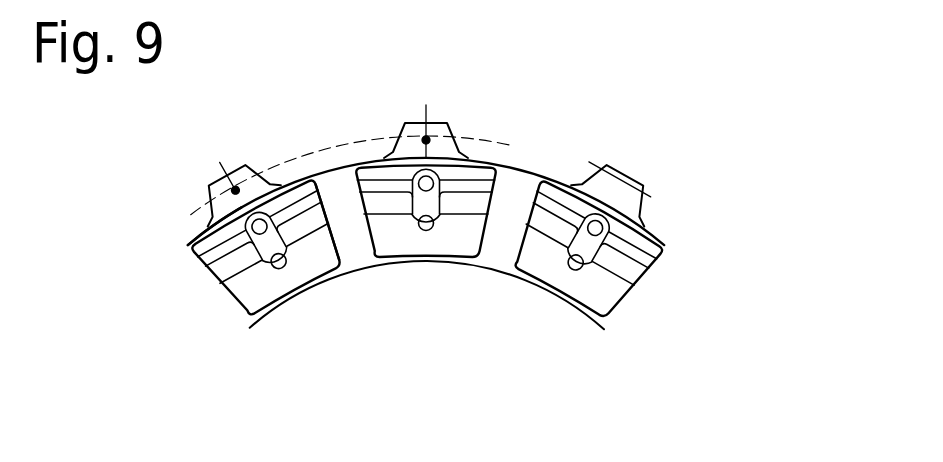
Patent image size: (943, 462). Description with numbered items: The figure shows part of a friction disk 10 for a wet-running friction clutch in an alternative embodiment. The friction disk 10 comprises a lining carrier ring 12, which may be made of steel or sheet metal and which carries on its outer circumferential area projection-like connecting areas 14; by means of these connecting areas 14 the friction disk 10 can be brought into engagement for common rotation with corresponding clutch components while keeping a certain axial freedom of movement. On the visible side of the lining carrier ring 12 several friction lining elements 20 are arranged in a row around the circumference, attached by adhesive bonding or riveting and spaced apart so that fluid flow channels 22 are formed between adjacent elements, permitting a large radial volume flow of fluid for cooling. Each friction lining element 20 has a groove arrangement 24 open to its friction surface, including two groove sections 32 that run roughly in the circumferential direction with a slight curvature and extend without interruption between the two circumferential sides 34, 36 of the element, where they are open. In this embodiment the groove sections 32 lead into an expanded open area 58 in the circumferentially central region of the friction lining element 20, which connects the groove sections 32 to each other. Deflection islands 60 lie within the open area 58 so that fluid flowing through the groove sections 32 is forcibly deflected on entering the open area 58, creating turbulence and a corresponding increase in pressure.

The friction disk 10 is at (732, 132).
The lining carrier ring 12 is at (519, 180).
The connecting areas 14 is at (612, 178).
The friction lining element 20 is at (249, 234).
The fluid flow channel 22 is at (343, 172).
The groove arrangement 24 is at (185, 242).
The groove sections 32 is at (247, 247).
The circumferential side 34 is at (242, 313).
The circumferential side 36 is at (337, 250).
The open area 58 is at (213, 226).
The deflection islands 60 is at (257, 222).